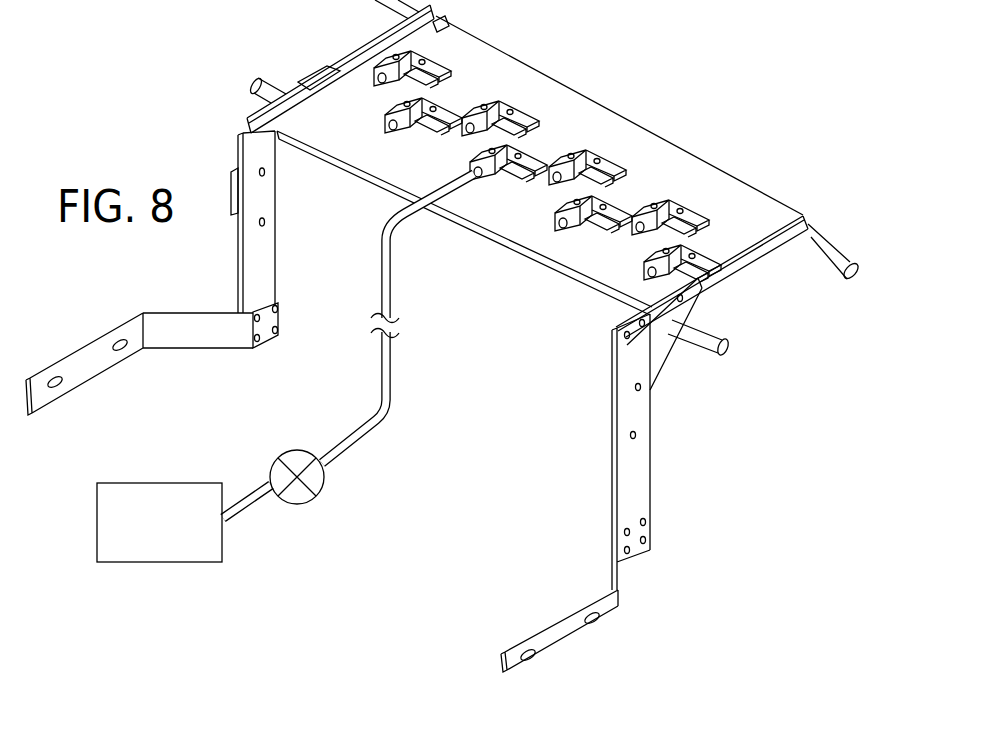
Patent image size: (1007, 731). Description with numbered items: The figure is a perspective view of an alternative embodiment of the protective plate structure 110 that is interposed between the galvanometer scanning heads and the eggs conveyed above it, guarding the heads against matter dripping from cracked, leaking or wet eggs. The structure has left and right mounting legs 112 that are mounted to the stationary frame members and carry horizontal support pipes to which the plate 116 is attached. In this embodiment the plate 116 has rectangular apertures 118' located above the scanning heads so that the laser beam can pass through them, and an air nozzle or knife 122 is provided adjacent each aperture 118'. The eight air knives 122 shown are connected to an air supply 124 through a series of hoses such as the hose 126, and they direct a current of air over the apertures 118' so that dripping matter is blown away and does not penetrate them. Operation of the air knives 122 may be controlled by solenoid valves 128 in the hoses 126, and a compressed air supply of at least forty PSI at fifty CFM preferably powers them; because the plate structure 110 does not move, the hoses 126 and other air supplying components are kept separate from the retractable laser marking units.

The protective plate structure 110 is at (674, 84).
The mounting legs 112 is at (192, 330).
The plate 116 is at (562, 118).
The rectangular apertures 118' is at (682, 181).
The air nozzle or knife 122 is at (497, 177).
The air supply 124 is at (128, 563).
The hose 126 is at (381, 428).
The solenoid valve 128 is at (299, 450).